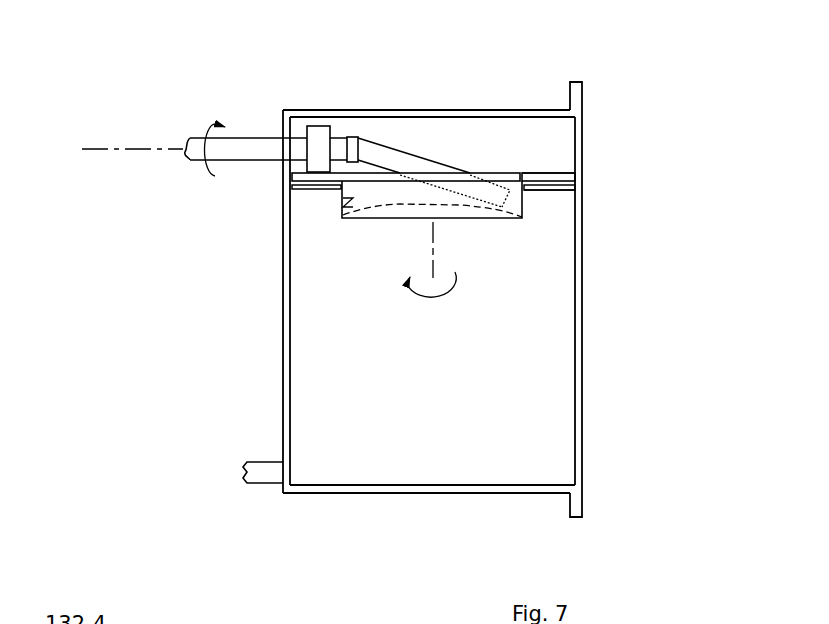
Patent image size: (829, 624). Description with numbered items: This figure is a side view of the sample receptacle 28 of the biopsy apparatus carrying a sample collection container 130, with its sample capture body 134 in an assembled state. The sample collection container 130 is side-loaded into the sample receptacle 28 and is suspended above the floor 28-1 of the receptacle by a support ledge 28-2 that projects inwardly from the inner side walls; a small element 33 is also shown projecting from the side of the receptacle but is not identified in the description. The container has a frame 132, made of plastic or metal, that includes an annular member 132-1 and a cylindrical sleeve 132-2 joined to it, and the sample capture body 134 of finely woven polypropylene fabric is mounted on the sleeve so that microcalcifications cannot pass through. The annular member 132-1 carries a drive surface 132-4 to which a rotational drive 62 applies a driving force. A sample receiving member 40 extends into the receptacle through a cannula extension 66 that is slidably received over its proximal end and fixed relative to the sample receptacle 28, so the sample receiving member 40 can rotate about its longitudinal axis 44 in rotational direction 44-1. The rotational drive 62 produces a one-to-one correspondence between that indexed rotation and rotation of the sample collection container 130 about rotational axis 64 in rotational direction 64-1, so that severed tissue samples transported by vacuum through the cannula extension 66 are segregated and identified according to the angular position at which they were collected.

The sample receptacle 28 is at (583, 380).
The floor 28-1 is at (386, 486).
The support ledge 28-2 is at (338, 187).
The mounting tab 33 is at (262, 485).
The sample receiving member 40 is at (260, 138).
The longitudinal axis 44 is at (102, 148).
The rotational direction 44-1 is at (220, 124).
The rotational drive 62 is at (318, 126).
The cannula extension 66 is at (372, 140).
The sample collection container 130 is at (526, 165).
The frame 132 is at (584, 180).
The annular member 132-1 is at (542, 178).
The cylindrical sleeve 132-2 is at (343, 212).
The drive surface 132-4 is at (546, 174).
The sample capture body 134 is at (499, 228).
The rotational axis 64 is at (432, 248).
The rotational direction 64-1 is at (433, 296).